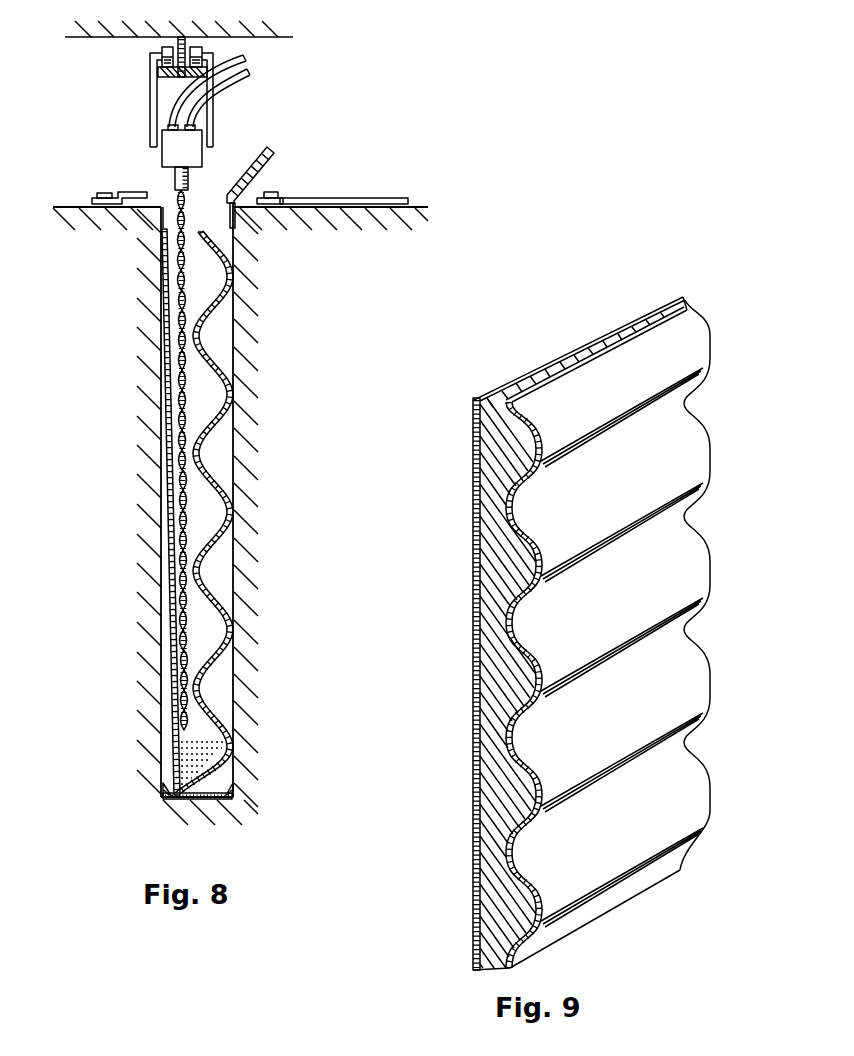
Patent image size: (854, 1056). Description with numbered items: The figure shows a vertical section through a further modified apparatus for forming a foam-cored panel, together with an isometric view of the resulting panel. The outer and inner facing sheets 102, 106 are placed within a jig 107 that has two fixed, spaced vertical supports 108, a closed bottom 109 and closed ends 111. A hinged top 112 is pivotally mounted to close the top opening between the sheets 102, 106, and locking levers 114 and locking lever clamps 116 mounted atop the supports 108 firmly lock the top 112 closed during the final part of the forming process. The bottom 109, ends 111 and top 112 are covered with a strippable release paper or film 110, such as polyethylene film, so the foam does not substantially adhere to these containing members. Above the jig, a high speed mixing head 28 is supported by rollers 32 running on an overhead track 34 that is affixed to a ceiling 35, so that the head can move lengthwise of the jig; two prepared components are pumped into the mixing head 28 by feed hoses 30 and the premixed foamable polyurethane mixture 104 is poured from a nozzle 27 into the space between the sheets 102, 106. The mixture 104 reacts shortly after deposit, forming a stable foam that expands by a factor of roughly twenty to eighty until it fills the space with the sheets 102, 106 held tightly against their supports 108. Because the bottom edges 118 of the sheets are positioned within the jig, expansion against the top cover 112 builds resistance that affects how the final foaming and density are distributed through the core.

In FIG. 8, the nozzle 27 is at (188, 180).
In FIG. 8, the mixing head 28 is at (167, 155).
In FIG. 8, the feed hoses 30 is at (249, 72).
In FIG. 8, the rollers 32 is at (165, 52).
In FIG. 8, the overhead track 34 is at (168, 78).
In FIG. 8, the ceiling 35 is at (94, 32).
In FIG. 8, the outer facing sheet 102 is at (220, 368).
In FIG. 9, the outer facing sheet 102 is at (518, 535).
In FIG. 8, the foamable polyurethane mixture 104 is at (170, 290).
In FIG. 9, the foamable polyurethane mixture 104 is at (495, 432).
In FIG. 8, the inner facing sheet 106 is at (173, 592).
In FIG. 9, the inner facing sheet 106 is at (474, 490).
In FIG. 8, the jig 107 is at (95, 464).
In FIG. 8, the vertical supports 108 is at (226, 578).
In FIG. 8, the closed bottom 109 is at (206, 797).
In FIG. 8, the strippable release paper or film 110 is at (218, 783).
In FIG. 8, the closed ends 111 is at (220, 336).
In FIG. 8, the hinged top 112 is at (269, 146).
In FIG. 8, the locking levers 114 is at (352, 198).
In FIG. 8, the locking lever clamps 116 is at (138, 192).
In FIG. 8, the bottom edges 118 is at (184, 797).